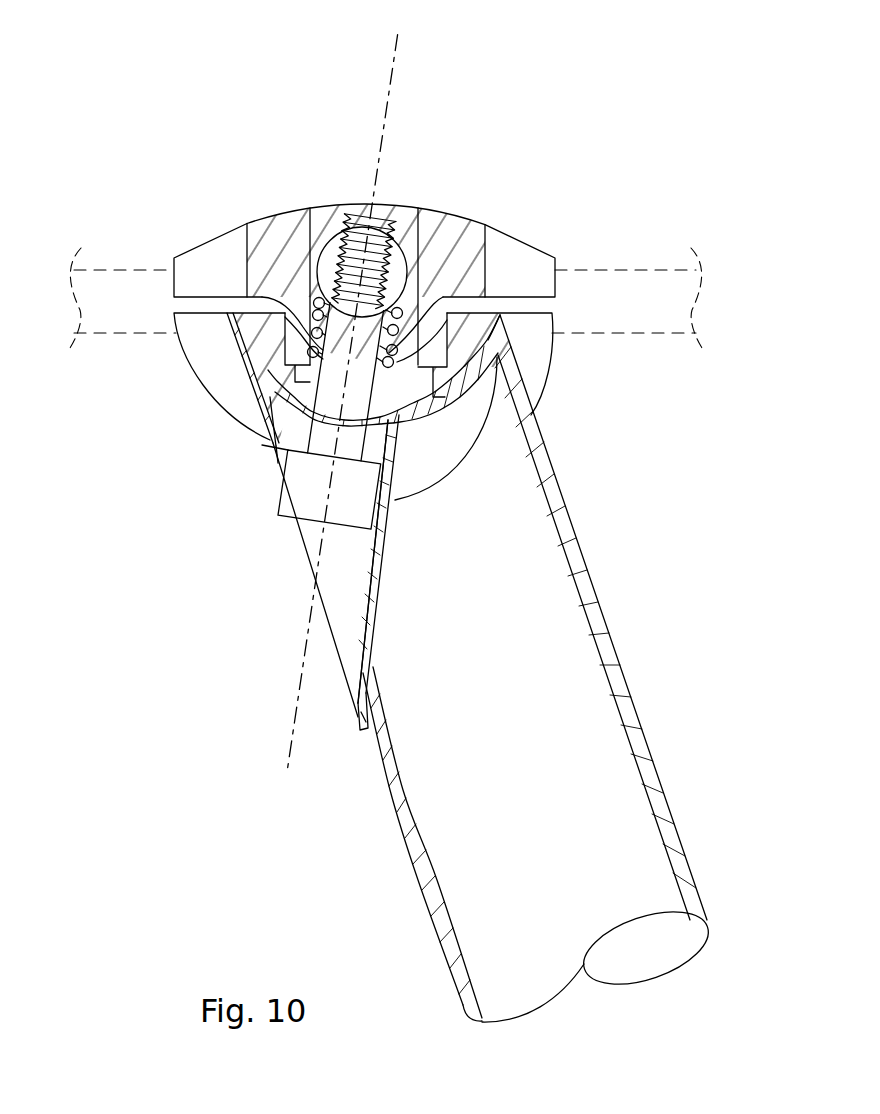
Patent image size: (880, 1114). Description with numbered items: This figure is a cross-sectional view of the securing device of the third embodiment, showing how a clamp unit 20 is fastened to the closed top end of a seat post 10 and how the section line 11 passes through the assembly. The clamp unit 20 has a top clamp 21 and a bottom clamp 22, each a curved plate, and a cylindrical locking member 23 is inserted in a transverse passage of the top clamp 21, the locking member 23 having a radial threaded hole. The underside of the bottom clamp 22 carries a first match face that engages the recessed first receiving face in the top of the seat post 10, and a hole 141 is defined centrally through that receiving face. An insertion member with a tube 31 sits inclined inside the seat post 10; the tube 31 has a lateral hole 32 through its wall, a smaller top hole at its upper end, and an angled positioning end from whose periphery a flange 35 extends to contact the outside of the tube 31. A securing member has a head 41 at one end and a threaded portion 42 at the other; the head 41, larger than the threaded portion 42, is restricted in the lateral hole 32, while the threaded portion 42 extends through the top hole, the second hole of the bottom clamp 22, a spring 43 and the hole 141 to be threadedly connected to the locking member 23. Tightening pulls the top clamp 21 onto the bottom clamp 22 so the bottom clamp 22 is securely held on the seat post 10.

The seat post 10 is at (580, 535).
The receiving faces 11 is at (397, 28).
The hole 141 is at (376, 420).
The clamp unit 20 is at (156, 498).
The top clamp 21 is at (219, 231).
The bottom clamp 22 is at (188, 368).
The locking member 23 is at (332, 248).
The tube 31 is at (378, 598).
The lateral hole 32 is at (323, 557).
The flange 35 is at (357, 724).
The head 41 is at (317, 517).
The threaded portion 42 is at (360, 215).
The spring 43 is at (310, 354).